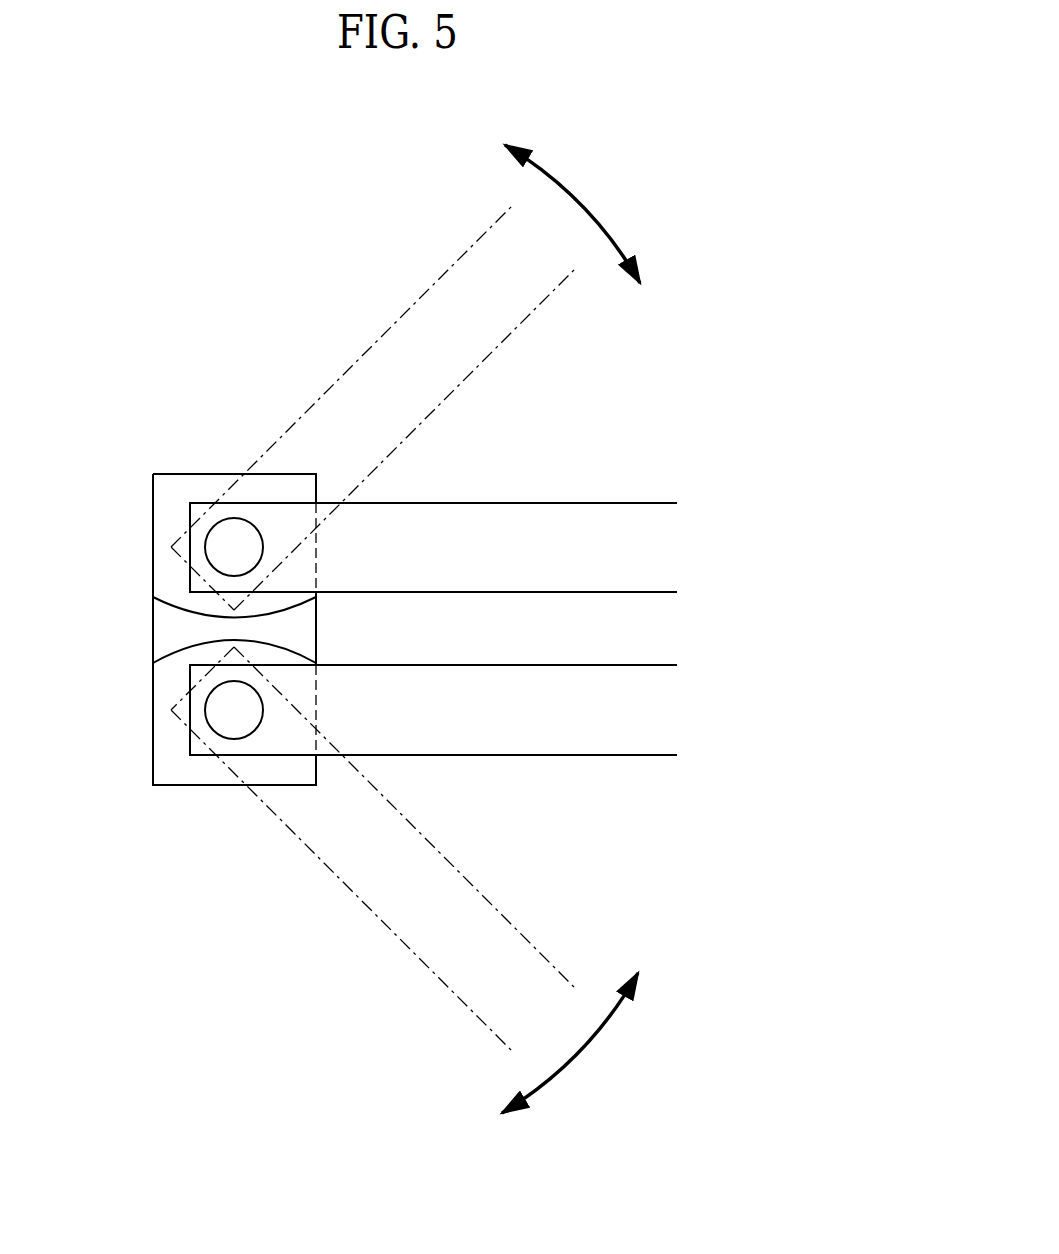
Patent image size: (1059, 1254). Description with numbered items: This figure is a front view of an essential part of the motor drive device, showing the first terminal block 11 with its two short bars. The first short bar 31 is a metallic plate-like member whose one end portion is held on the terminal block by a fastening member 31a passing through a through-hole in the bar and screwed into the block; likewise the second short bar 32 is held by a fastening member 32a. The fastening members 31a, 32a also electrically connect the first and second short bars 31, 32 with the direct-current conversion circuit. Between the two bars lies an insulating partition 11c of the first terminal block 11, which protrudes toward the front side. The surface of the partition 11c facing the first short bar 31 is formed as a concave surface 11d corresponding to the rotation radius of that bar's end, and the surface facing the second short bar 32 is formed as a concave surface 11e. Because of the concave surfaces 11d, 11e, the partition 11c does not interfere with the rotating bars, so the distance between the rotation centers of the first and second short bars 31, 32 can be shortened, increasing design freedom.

The first terminal block 11 is at (180, 473).
The partition 11c is at (167, 628).
The concave surface 11d is at (168, 597).
The concave surface 11e is at (168, 662).
The first short bar 31 is at (572, 502).
The fastening member 31a is at (231, 538).
The second short bar 32 is at (571, 755).
The fastening member 32a is at (227, 715).